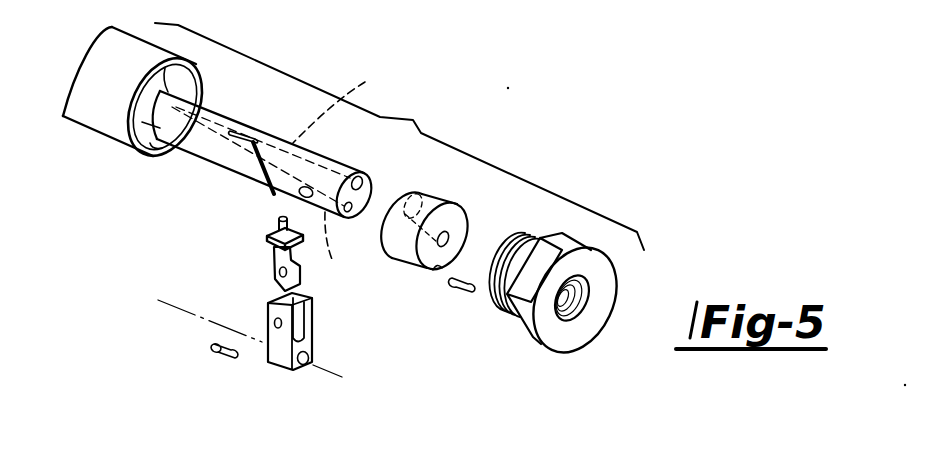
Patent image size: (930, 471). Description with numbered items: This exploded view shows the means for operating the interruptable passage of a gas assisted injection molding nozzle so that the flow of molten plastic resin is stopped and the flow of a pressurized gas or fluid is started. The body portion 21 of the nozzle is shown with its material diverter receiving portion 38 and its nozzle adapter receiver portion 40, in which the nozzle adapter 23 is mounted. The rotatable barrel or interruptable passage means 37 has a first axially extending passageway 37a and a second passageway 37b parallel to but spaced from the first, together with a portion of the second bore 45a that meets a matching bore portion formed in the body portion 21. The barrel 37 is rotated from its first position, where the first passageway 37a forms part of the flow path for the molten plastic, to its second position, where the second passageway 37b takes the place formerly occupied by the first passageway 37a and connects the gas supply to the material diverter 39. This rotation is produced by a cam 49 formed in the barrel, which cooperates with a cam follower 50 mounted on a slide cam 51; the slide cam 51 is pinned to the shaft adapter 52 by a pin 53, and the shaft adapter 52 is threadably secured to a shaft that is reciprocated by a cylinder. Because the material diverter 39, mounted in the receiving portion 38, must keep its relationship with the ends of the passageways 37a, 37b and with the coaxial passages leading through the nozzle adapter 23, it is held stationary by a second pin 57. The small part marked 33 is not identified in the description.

The body portion 21 is at (87, 113).
The nozzle adapter 23 is at (524, 318).
The orifice 33 is at (449, 237).
The rotatable barrel 37 is at (217, 153).
The first passageway 37a is at (298, 124).
The second passageway 37b is at (274, 196).
The material diverter receiving portion 38 is at (163, 88).
The material diverter 39 is at (433, 207).
The nozzle adapter portion 40 is at (158, 143).
The portion of the second bore 45a is at (302, 200).
The cam 49 is at (269, 158).
The cam follower 50 is at (267, 239).
The slide cam 51 is at (273, 268).
The shaft adapter 52 is at (278, 357).
The pin 53 is at (215, 355).
The second pin 57 is at (452, 286).